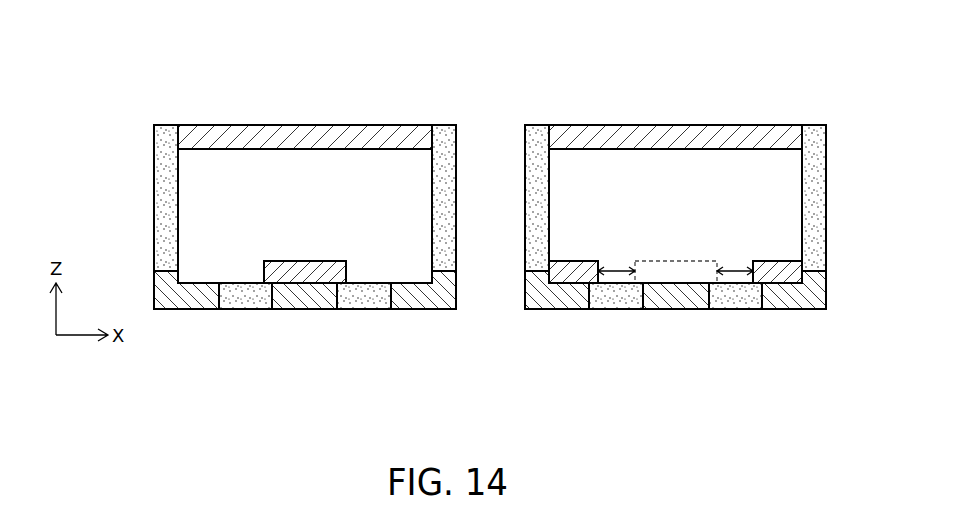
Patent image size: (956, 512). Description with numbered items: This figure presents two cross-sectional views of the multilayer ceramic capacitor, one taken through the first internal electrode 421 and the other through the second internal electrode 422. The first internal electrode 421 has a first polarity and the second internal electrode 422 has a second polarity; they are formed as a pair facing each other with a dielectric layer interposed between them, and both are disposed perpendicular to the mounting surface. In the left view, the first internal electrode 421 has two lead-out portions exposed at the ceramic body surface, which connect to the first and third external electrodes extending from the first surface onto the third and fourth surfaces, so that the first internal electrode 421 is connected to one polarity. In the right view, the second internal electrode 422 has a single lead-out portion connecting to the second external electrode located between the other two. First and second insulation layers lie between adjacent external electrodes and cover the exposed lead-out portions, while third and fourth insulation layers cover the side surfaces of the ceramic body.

The first internal electrode 421 is at (258, 160).
The second internal electrode 422 is at (632, 170).